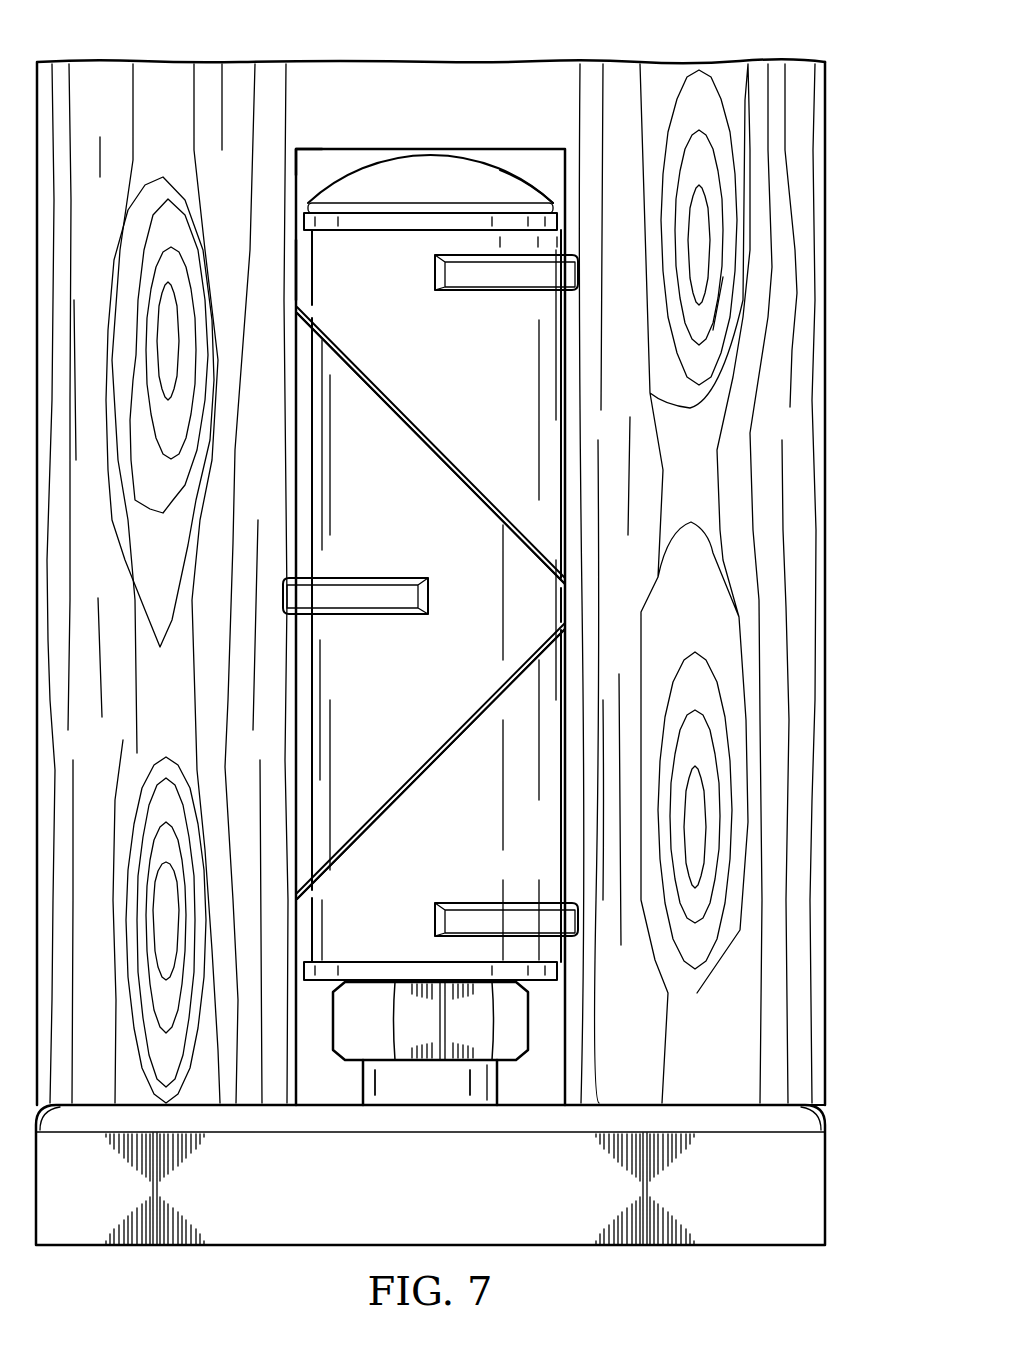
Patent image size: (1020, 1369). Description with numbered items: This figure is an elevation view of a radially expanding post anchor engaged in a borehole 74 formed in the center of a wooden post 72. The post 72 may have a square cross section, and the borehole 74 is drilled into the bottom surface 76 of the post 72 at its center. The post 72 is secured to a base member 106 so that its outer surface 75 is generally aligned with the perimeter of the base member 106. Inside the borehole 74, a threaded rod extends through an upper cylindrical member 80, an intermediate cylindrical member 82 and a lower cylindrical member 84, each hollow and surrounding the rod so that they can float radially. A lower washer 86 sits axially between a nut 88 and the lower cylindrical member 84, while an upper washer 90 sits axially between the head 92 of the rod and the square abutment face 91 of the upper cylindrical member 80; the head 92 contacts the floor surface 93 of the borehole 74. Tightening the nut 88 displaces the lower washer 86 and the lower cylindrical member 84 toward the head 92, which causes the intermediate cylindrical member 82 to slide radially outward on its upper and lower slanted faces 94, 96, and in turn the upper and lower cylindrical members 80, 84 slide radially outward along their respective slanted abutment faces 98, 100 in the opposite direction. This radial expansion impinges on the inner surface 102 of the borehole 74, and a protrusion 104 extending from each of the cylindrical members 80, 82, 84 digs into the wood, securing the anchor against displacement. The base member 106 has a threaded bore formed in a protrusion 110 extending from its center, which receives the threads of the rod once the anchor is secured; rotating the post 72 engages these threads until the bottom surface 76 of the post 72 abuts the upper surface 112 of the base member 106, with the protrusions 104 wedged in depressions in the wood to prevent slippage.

The wooden post 72 is at (778, 72).
The borehole 74 is at (538, 150).
The outer surface 75 is at (830, 590).
The bottom surface 76 is at (640, 1105).
The upper cylindrical member 80 is at (416, 357).
The intermediate cylindrical member 82 is at (438, 615).
The lower cylindrical member 84 is at (416, 879).
The lower washer 86 is at (393, 972).
The nut 88 is at (512, 1045).
The upper washer 90 is at (413, 222).
The square abutment face 91 is at (378, 224).
The head 92 is at (530, 185).
The floor surface 93 is at (316, 158).
The upper slanted face 94 is at (436, 443).
The lower slanted face 96 is at (437, 760).
The slanted abutment face 98 is at (398, 412).
The slanted abutment face 100 is at (397, 792).
The inner surface 102 is at (300, 278).
The protrusion 104 is at (473, 275).
The base member 106 is at (272, 1246).
The protrusion 110 is at (420, 1088).
The upper surface 112 is at (705, 1105).